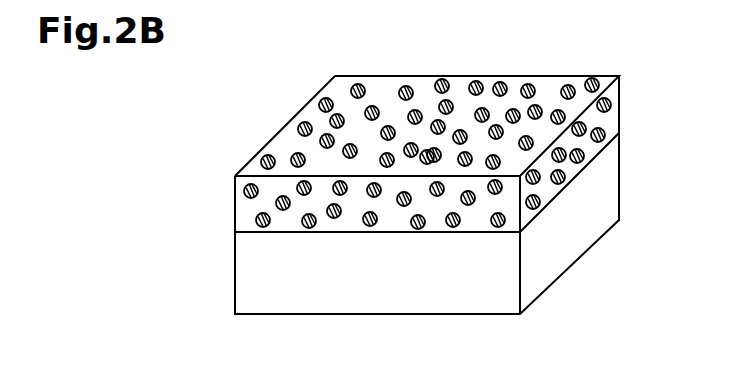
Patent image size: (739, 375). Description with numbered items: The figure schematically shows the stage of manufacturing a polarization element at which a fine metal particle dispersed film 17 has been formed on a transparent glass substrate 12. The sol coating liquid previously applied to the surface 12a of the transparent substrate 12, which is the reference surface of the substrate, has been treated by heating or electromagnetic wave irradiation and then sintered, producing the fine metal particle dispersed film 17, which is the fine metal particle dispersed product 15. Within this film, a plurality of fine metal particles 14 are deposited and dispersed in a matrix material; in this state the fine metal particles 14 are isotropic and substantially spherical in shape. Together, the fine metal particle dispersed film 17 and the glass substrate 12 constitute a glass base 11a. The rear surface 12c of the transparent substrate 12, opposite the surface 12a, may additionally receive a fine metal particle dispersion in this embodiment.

The glass base 11a is at (287, 80).
The fine metal particles 14 is at (498, 85).
The fine metal particle dispersed product 15 is at (547, 87).
The fine metal particle dispersed film 17 is at (628, 117).
The transparent substrate 12 is at (608, 180).
The surface 12a is at (246, 222).
The rear surface 12c is at (488, 315).